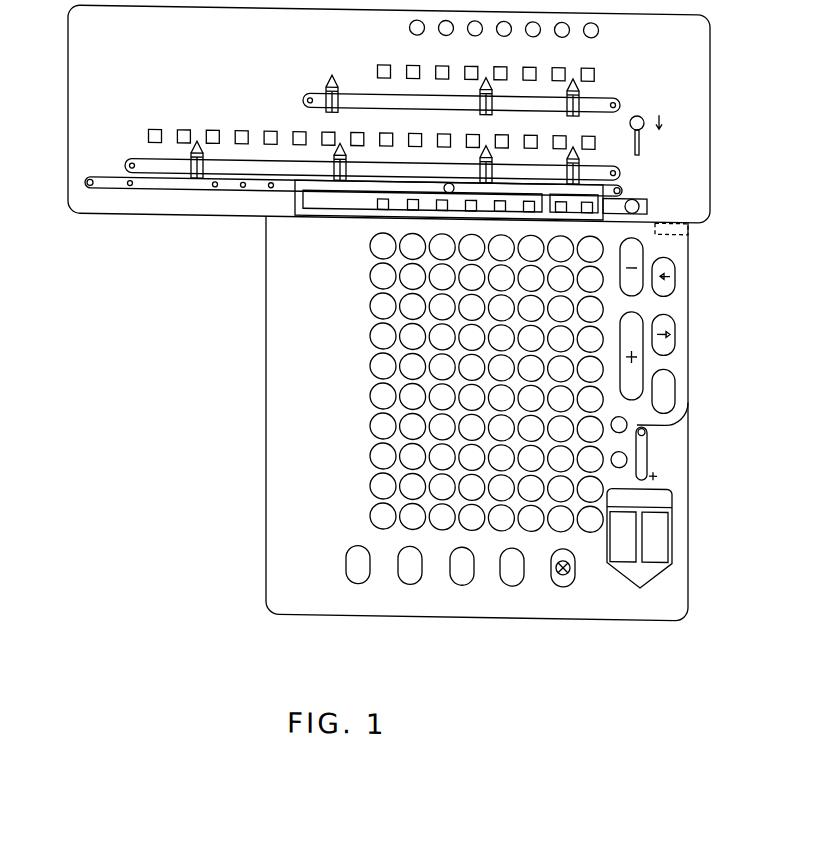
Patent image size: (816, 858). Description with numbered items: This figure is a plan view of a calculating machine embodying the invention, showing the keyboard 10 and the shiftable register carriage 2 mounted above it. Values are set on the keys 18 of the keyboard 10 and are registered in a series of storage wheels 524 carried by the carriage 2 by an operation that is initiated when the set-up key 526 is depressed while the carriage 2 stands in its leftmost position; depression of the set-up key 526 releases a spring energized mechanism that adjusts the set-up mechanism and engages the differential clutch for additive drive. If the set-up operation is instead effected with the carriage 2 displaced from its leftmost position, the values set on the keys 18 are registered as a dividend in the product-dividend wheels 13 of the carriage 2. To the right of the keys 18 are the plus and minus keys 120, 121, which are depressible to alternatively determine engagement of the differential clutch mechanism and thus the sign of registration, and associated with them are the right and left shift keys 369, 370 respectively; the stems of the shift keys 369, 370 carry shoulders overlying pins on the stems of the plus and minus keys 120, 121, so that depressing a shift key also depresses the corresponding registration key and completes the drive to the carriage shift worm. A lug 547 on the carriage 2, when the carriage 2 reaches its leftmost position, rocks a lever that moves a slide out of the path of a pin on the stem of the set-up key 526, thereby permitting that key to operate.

The carriage 2 is at (82, 145).
The keyboard 10 is at (283, 346).
The product-dividend wheels 13 is at (444, 123).
The keys 18 is at (378, 476).
The storage wheels 524 is at (410, 201).
The lug 547 is at (688, 220).
The minus key 121 is at (640, 240).
The left shift key 370 is at (667, 277).
The right shift key 369 is at (670, 318).
The plus key 120 is at (638, 359).
The set-up key 526 is at (670, 393).